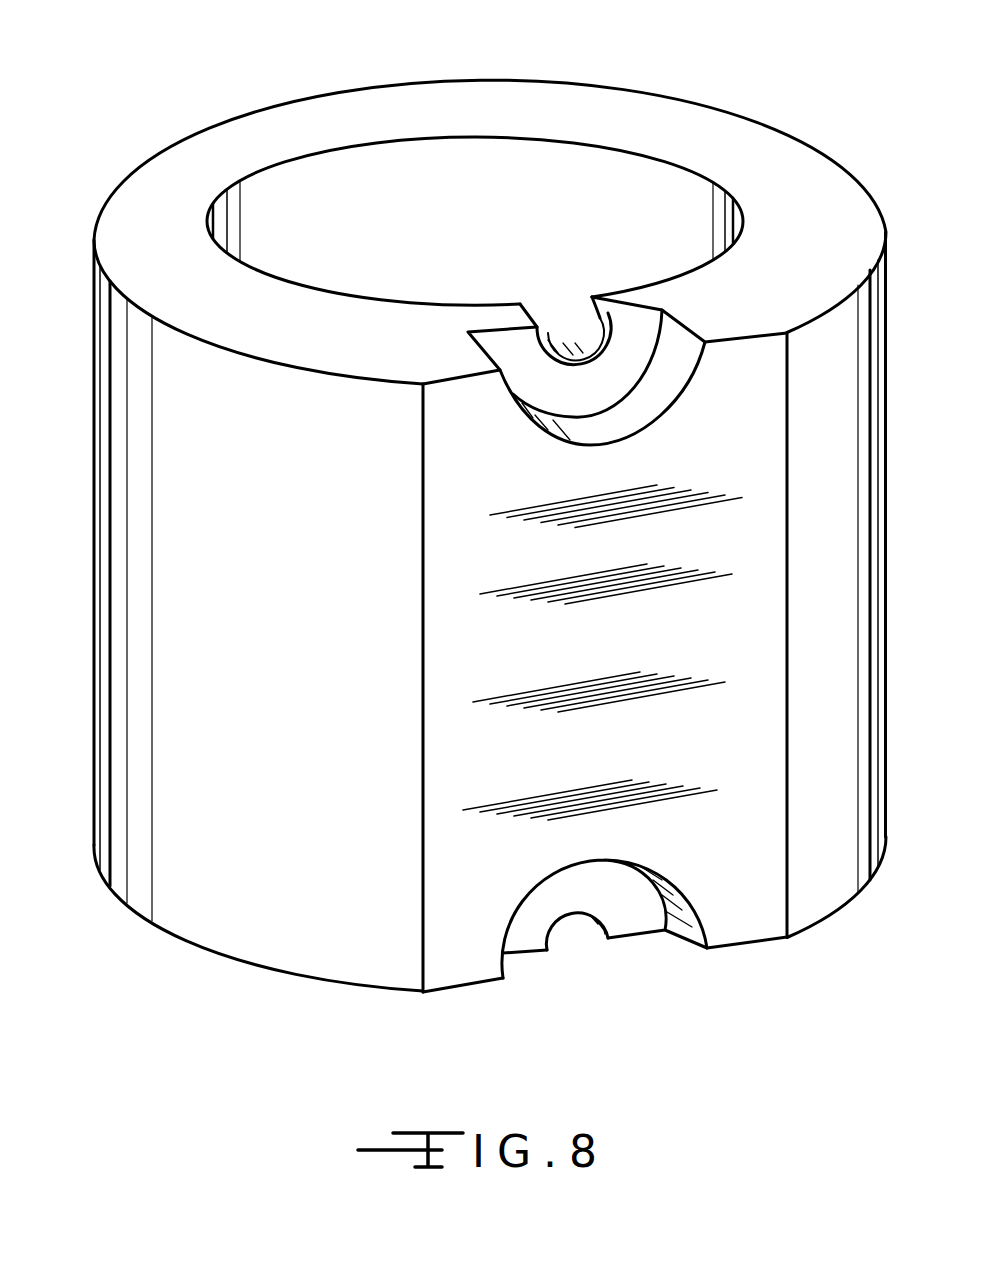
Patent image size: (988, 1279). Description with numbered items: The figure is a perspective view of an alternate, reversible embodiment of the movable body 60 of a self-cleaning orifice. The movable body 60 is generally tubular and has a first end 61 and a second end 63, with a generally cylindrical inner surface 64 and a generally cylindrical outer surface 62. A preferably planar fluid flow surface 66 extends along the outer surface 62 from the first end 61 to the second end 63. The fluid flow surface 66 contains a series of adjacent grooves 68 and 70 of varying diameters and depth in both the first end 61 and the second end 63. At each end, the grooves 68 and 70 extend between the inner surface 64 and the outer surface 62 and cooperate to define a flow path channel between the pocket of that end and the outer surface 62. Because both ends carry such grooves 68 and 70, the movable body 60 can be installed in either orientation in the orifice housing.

The movable body 60 is at (223, 87).
The first end 61 is at (460, 100).
The outer surface 62 is at (190, 445).
The second end 63 is at (267, 968).
The inner surface 64 is at (272, 215).
The fluid flow surface 66 is at (453, 578).
The groove 68 is at (675, 370).
The groove 70 is at (593, 324).